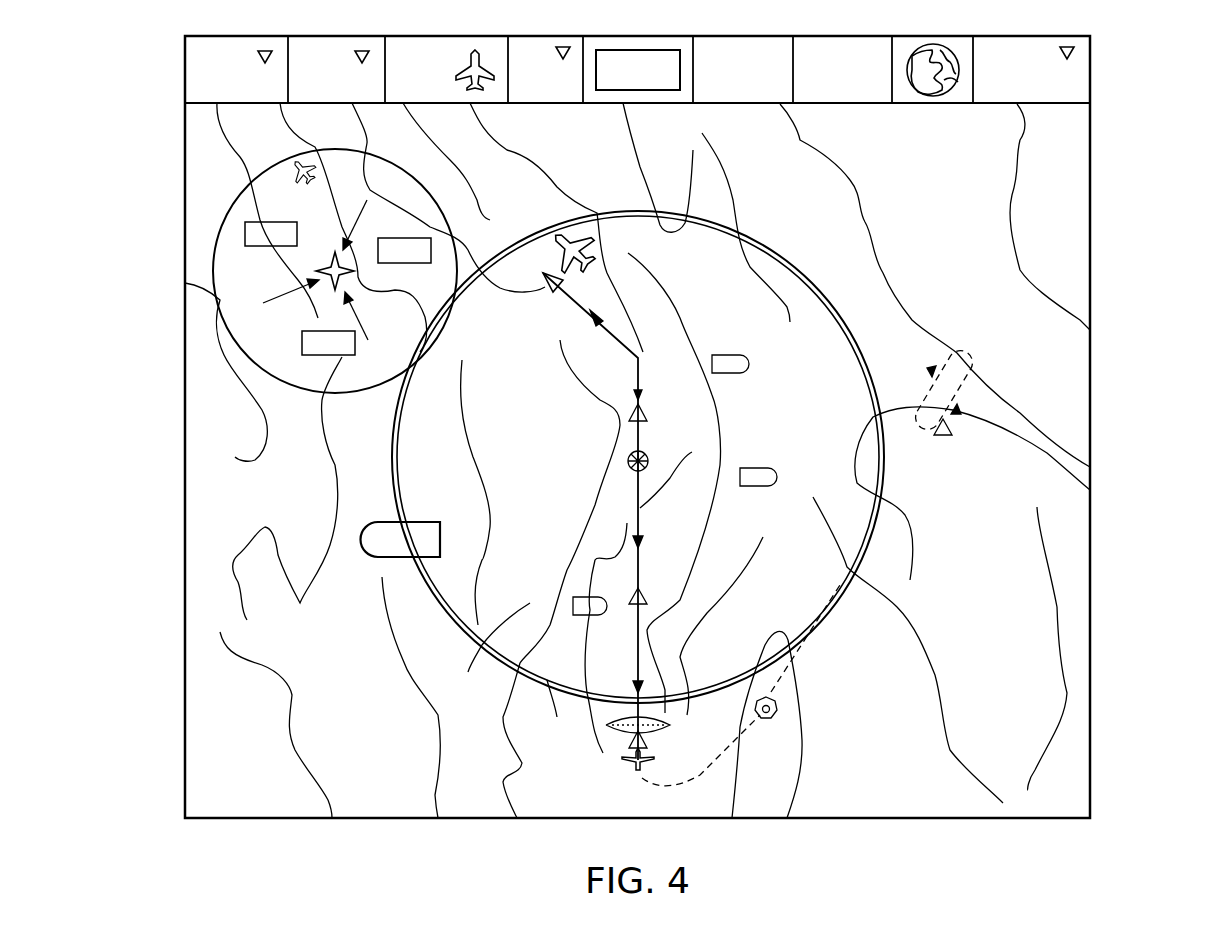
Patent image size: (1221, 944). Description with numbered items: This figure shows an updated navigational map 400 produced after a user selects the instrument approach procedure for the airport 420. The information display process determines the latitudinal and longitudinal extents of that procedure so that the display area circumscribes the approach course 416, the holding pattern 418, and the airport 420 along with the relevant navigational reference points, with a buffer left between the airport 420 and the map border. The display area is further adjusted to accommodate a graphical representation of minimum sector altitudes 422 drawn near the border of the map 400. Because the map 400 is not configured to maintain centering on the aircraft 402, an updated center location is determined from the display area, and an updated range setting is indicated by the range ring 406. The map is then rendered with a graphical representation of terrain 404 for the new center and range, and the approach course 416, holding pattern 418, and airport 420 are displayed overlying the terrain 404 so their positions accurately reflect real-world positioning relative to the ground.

The navigational map 400 is at (1095, 369).
The aircraft 402 is at (600, 250).
The terrain 404 is at (372, 735).
The range ring 406 is at (623, 498).
The approach course 416 is at (617, 409).
The holding pattern 418 is at (940, 450).
The airport 420 is at (614, 772).
The minimum sector altitudes 422 is at (215, 290).